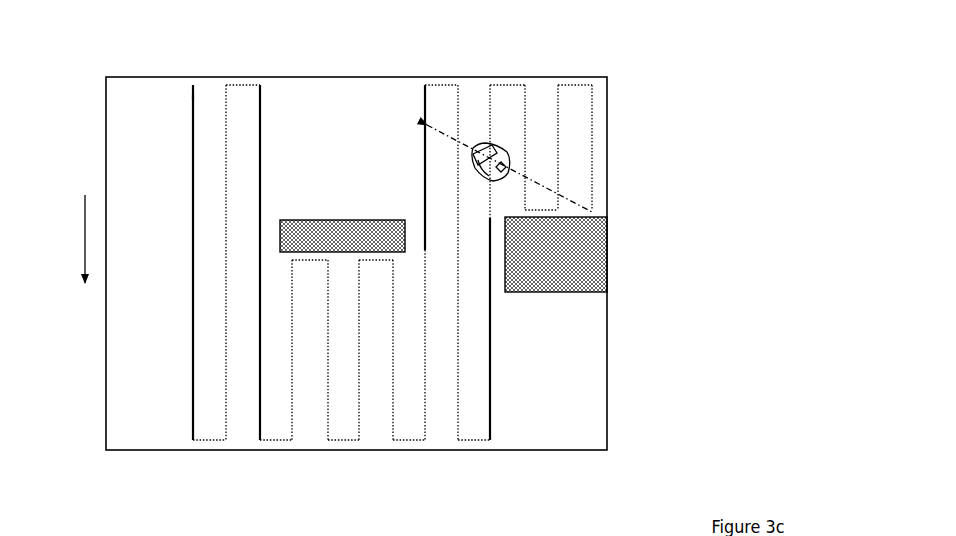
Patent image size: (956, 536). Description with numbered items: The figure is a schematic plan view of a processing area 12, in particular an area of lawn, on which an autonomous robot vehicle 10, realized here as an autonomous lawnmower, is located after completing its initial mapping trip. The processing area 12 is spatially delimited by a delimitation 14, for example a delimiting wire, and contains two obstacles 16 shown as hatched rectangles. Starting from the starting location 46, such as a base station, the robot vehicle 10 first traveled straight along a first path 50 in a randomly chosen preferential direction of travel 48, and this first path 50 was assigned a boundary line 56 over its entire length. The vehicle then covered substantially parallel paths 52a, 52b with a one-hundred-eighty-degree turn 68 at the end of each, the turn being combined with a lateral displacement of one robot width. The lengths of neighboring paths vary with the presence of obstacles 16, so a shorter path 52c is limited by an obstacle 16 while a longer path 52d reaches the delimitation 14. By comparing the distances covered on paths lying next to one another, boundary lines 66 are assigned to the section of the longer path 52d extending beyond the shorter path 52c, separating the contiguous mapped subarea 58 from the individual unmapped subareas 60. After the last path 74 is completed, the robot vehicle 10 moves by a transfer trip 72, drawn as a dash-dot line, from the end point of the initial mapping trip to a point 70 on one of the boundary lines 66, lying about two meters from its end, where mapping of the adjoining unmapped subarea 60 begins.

The autonomous robot vehicle 10 is at (507, 153).
The processing area 12 is at (123, 371).
The delimitation 14 is at (550, 76).
The obstacle 16 is at (351, 246).
The starting location 46 is at (193, 93).
The preferential direction of travel 48 is at (83, 223).
The first path 50 is at (193, 108).
The path 52a is at (228, 441).
The path 52b is at (262, 441).
The shorter path 52c is at (393, 441).
The longer path 52d is at (427, 441).
The boundary line 56 is at (193, 328).
The mapped subarea 58 is at (356, 345).
The unmapped subarea 60 is at (166, 262).
The boundary line 66 is at (260, 89).
The 180° turn 68 is at (342, 441).
The point 70 is at (422, 119).
The transfer trip 72 is at (573, 196).
The last path 74 is at (592, 97).